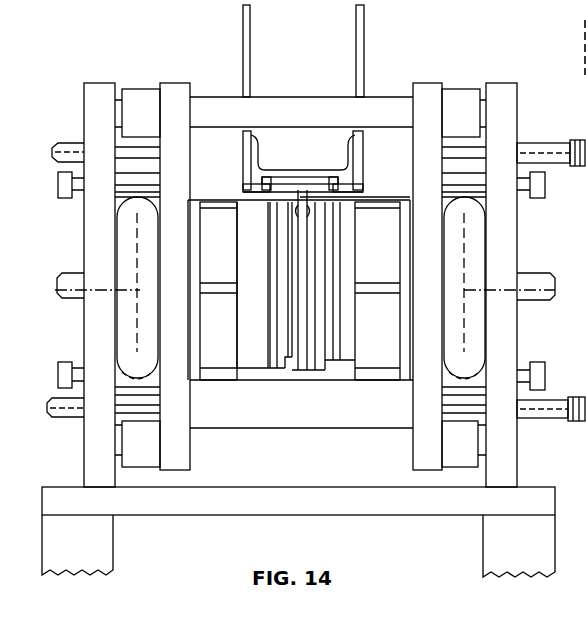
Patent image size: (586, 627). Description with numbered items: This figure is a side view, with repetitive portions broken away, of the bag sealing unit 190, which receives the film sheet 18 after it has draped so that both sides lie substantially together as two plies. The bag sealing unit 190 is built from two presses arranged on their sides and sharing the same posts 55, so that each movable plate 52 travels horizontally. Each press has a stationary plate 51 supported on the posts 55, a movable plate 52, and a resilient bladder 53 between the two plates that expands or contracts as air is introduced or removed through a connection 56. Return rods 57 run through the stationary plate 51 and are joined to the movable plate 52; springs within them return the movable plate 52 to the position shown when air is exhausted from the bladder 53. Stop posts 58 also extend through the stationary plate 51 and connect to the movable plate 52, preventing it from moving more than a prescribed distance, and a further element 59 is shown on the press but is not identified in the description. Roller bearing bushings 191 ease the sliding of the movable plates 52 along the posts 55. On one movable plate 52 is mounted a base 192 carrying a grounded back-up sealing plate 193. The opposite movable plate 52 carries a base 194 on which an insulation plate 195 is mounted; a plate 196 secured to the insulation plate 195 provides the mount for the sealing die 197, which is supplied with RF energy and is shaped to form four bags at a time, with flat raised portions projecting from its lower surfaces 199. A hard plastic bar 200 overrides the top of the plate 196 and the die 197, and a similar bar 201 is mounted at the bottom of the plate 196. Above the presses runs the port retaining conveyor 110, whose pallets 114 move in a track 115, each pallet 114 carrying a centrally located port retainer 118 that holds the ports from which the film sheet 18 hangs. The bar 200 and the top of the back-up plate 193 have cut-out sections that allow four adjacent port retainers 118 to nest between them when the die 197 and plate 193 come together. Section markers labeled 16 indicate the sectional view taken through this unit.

The film sheet 18 is at (300, 265).
The stationary plate 51 is at (503, 83).
The movable plate 52 is at (172, 83).
The resilient bladder 53 is at (470, 260).
The posts 55 is at (383, 97).
The connection 56 is at (540, 285).
The return rods 57 is at (535, 143).
The stop posts 58 is at (537, 200).
The lower tie bolt 59 is at (558, 400).
The port retaining conveyor 110 is at (373, 56).
The pallet 114 is at (333, 182).
The track 115 is at (268, 182).
The port retainer 118 is at (307, 197).
The bag sealing unit 190 is at (73, 330).
The roller bearing bushings 191 is at (137, 90).
The base 192 is at (353, 382).
The back-up sealing plate 193 is at (323, 367).
The base 194 is at (207, 382).
The insulation plate 195 is at (248, 380).
The plate 196 is at (290, 368).
The sealing die 197 is at (298, 360).
The lower surfaces 199 is at (585, 110).
The hard plastic bar 200 is at (278, 198).
The bar 201 is at (284, 370).
The section line 16- 16 is at (569, 141).